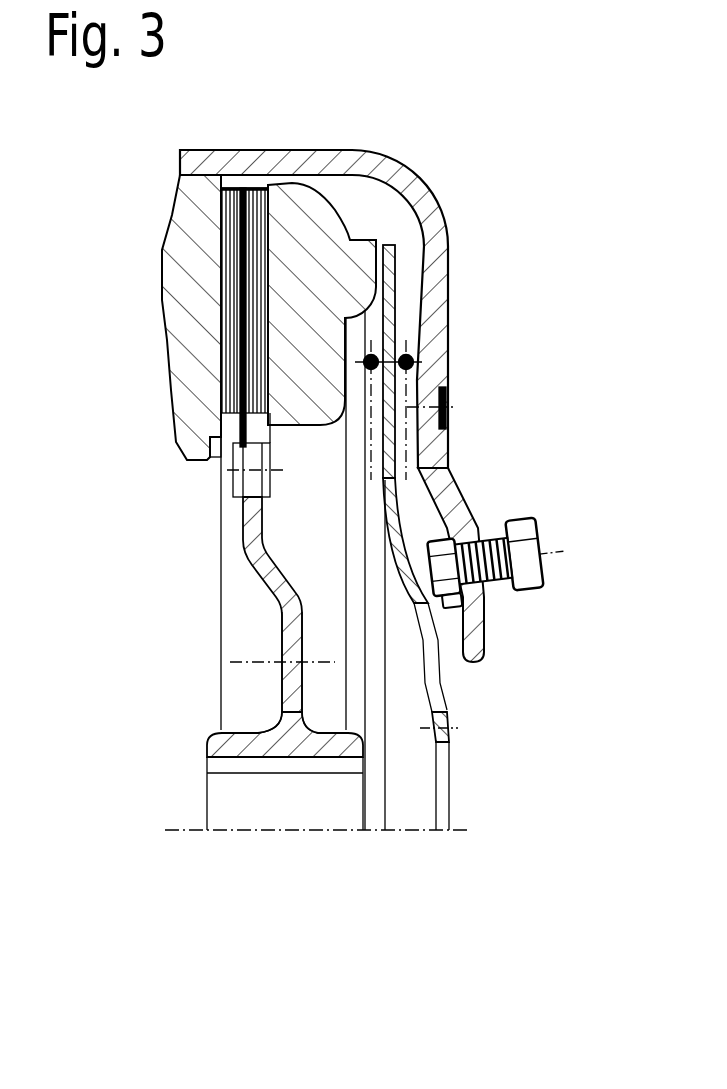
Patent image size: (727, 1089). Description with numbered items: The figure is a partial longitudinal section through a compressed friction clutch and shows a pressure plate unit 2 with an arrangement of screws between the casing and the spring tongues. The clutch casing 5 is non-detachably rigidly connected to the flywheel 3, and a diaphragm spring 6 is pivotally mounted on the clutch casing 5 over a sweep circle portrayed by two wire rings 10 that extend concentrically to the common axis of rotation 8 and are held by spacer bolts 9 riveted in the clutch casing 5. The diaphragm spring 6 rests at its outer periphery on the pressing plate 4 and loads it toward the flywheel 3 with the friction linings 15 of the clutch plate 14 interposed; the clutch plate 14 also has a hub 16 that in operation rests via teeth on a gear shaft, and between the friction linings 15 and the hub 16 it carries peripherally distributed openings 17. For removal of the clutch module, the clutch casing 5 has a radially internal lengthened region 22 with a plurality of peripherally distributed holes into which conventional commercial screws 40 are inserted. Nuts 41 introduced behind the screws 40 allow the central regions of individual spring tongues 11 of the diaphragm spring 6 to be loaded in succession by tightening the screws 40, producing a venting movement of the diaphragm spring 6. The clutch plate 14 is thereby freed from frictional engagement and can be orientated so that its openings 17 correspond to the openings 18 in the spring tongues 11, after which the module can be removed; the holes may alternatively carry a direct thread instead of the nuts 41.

The pressure plate unit 2 is at (480, 141).
The flywheel 3 is at (187, 220).
The pressing plate 4 is at (303, 210).
The clutch casing 5 is at (393, 174).
The diaphragm spring 6 is at (390, 315).
The axis of rotation 8 is at (200, 832).
The spacer bolts 9 is at (447, 423).
The wire rings 10 is at (405, 346).
The spring tongues 11 is at (448, 740).
The clutch plate 14 is at (253, 534).
The friction linings 15 is at (255, 200).
The hub 16 is at (233, 745).
The openings 17 is at (287, 620).
The openings 18 is at (433, 687).
The lengthened region 22 is at (463, 532).
The screws 40 is at (538, 562).
The nuts 41 is at (457, 607).